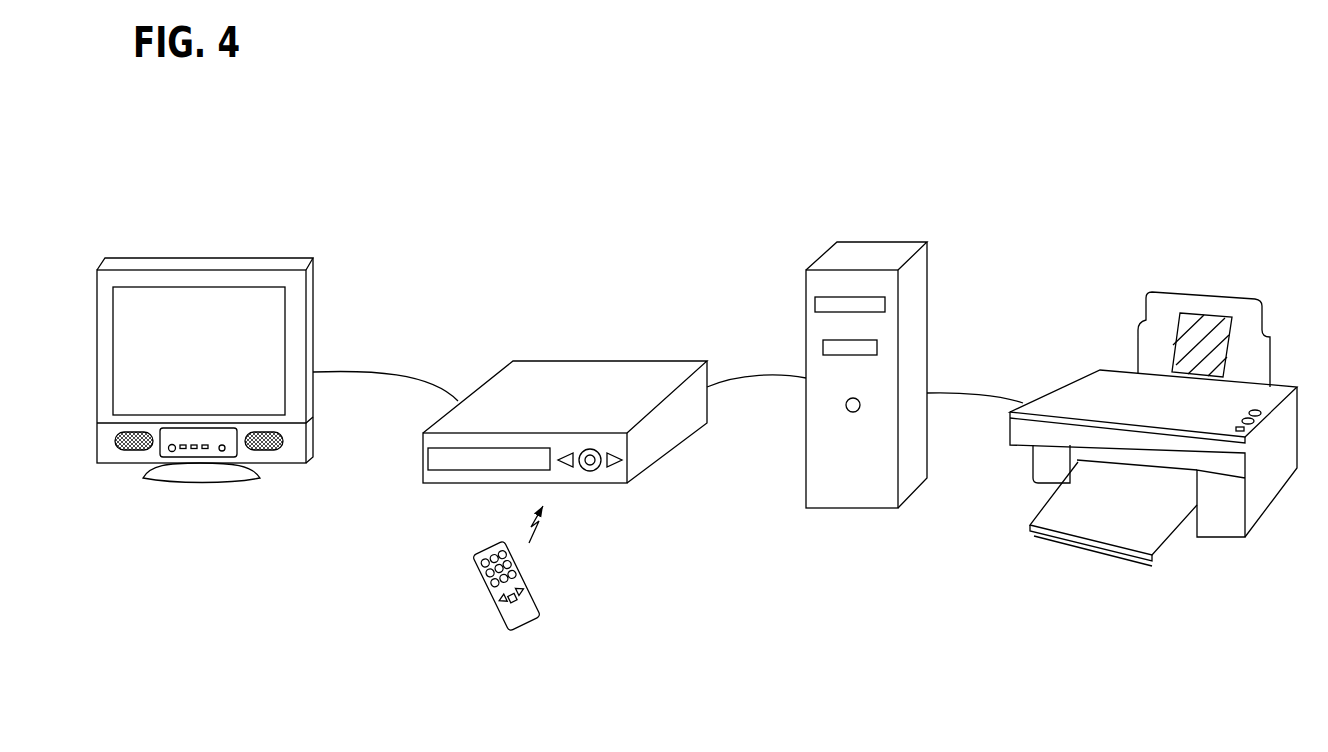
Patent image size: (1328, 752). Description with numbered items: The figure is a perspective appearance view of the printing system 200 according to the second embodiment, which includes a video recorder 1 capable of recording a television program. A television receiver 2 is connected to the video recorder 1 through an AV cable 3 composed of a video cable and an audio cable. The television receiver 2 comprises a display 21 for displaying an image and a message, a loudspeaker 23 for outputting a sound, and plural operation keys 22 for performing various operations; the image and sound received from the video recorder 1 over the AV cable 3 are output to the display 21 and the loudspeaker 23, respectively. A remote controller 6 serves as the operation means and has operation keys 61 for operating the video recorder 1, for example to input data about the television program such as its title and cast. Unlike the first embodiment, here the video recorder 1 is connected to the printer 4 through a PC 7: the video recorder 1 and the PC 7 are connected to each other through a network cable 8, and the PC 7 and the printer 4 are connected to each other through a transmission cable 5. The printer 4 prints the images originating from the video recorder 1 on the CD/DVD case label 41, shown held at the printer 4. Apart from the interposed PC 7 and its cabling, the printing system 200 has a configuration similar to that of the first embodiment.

The printing system 200 is at (645, 116).
The video recorder 1 is at (583, 350).
The television receiver 2 is at (180, 369).
The display 21 is at (146, 325).
The operation keys 22 is at (177, 446).
The loudspeaker 23 is at (256, 447).
The AV cable 3 is at (392, 378).
The printer 4 is at (1153, 404).
The CD/DVD case label 41 is at (1200, 325).
The transmission cable 5 is at (978, 396).
The remote controller 6 is at (535, 580).
The operation keys 61 is at (493, 609).
The PC (personal computer) 7 is at (878, 230).
The network cable 8 is at (758, 375).